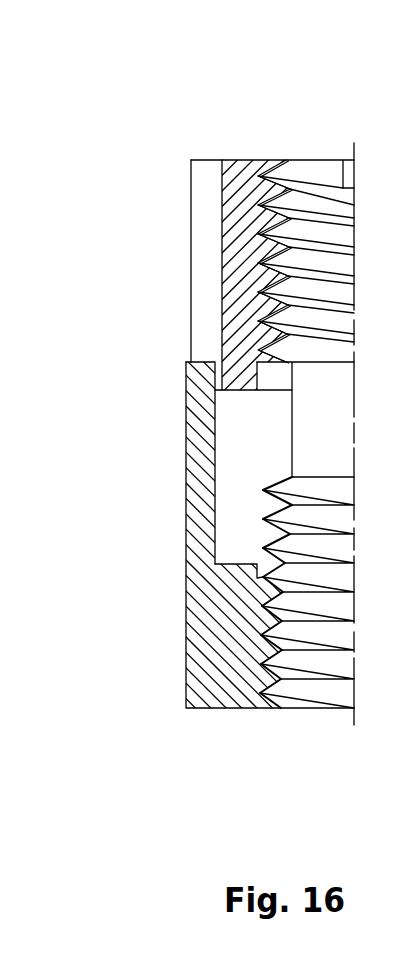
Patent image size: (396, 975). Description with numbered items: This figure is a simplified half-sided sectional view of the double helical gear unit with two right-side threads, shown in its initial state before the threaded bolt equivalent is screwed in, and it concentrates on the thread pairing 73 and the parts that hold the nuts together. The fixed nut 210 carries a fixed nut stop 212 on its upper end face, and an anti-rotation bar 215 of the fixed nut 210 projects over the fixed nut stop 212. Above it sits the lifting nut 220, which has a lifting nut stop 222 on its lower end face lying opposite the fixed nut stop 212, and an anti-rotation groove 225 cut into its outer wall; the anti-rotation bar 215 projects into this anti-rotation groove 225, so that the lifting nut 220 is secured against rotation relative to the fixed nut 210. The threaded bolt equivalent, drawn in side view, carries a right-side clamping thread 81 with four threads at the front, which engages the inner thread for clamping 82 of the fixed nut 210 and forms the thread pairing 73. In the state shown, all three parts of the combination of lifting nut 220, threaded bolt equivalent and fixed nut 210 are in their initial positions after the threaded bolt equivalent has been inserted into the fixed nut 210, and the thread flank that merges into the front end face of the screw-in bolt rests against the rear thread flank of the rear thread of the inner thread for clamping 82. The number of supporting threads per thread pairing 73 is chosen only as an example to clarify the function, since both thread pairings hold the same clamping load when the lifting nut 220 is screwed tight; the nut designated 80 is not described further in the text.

The thread pairing 73 is at (274, 150).
The lifting nut 220 is at (230, 211).
The anti-rotation groove 225 is at (206, 253).
The anti-rotation bar 215 is at (198, 405).
The lifting nut stop 222 is at (243, 390).
The right-side clamping thread 81 is at (263, 490).
The fixed nut stop 212 is at (235, 564).
The inner thread for clamping 82 is at (265, 600).
The fixed nut 210 is at (211, 637).
The nut 80 is at (178, 662).